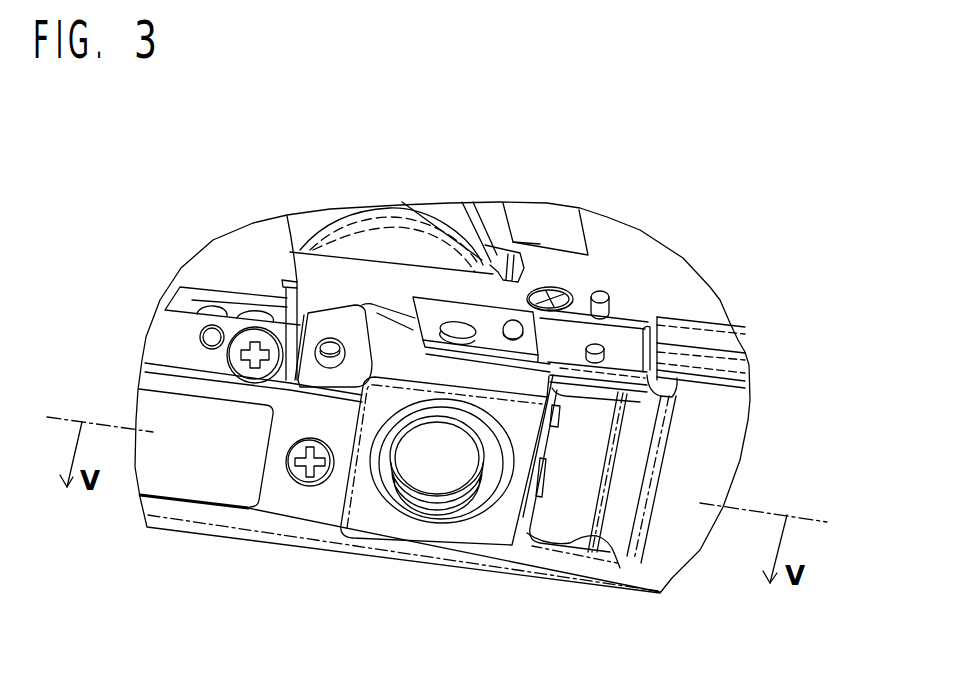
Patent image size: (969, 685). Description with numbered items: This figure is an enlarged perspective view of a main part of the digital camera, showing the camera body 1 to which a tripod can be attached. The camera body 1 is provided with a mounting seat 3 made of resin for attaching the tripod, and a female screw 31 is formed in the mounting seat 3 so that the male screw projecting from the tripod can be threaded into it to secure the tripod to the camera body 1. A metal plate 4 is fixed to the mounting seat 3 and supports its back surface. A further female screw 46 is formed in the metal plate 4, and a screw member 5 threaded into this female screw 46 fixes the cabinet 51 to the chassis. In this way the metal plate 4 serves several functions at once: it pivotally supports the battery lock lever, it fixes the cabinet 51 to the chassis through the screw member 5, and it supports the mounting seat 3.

The camera body 1 is at (192, 540).
The mounting seat 3 is at (368, 527).
The female screw 31 is at (462, 492).
The metal plate 4 is at (397, 296).
The female screw 46 is at (332, 344).
The screw member 5 is at (300, 478).
The cabinet 51 is at (262, 514).